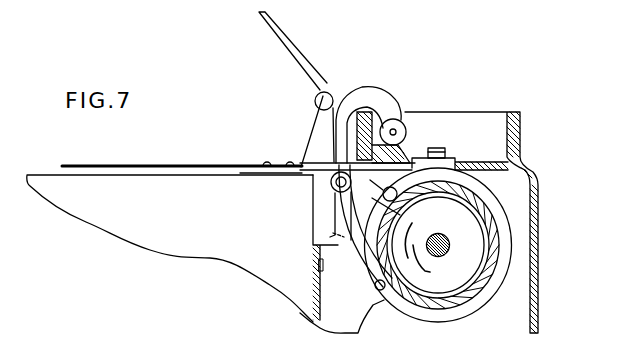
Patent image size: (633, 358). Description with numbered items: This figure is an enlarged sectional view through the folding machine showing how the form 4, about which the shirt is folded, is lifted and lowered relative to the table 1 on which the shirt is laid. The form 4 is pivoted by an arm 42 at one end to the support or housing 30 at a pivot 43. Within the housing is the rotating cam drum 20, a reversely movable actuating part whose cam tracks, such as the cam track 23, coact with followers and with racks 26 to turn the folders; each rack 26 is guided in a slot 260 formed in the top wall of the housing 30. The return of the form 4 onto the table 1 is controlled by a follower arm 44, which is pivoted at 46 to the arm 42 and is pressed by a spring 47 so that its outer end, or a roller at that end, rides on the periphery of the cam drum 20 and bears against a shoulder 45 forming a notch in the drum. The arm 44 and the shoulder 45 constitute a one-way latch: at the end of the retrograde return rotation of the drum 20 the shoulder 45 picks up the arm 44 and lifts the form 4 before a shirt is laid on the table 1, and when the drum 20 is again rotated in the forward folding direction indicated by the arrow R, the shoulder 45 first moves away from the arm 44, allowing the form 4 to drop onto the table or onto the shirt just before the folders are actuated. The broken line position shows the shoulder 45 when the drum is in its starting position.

The table 1 is at (77, 177).
The form 4 is at (165, 166).
The cam drum 20 is at (481, 284).
The cam track 23 is at (473, 190).
The rack 26 is at (440, 148).
The slot 260 is at (455, 165).
The support or housing 30 is at (540, 196).
The arm 42 is at (368, 88).
The pivot 43 is at (393, 132).
The follower arm 44 is at (353, 254).
The shoulder 45 is at (398, 208).
The pivot 46 is at (331, 182).
The spring 47 is at (333, 206).
The arrow R is at (427, 254).